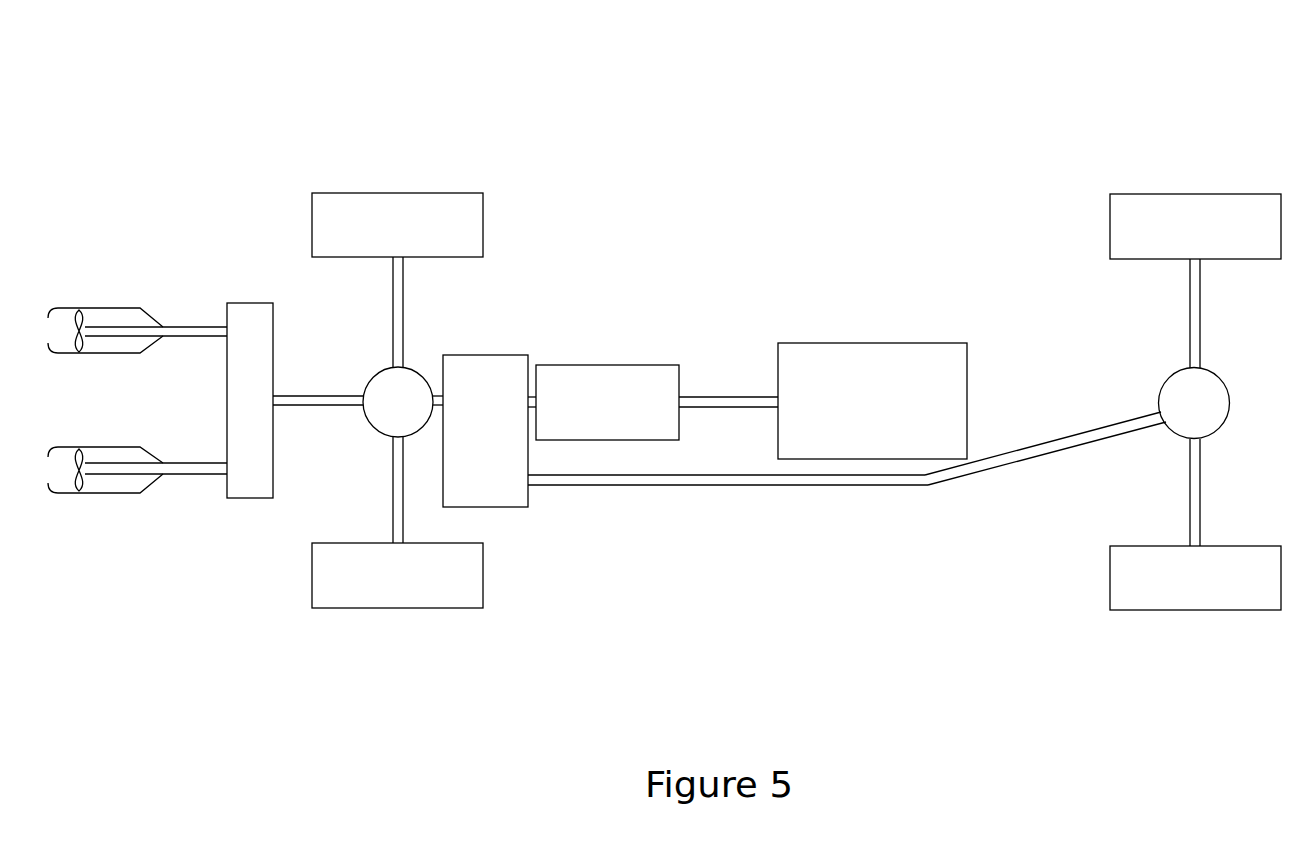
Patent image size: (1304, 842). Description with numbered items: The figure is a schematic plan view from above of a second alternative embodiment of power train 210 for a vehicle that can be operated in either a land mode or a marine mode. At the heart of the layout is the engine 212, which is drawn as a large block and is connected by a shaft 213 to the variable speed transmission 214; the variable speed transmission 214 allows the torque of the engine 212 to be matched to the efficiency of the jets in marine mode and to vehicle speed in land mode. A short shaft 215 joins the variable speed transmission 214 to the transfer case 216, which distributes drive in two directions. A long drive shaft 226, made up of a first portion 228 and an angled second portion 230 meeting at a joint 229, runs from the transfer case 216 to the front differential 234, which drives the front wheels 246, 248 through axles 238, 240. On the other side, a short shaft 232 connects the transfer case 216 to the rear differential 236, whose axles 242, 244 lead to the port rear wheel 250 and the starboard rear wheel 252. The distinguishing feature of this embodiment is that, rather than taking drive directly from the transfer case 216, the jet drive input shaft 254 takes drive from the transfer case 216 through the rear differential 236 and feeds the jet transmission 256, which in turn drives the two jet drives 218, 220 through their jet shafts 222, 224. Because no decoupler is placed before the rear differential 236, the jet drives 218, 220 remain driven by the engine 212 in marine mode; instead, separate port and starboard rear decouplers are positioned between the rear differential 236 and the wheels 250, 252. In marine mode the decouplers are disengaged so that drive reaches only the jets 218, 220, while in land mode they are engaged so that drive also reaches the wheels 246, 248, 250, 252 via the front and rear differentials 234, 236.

The power train 210 is at (707, 138).
The engine 212 is at (863, 417).
The shaft 213 is at (725, 407).
The variable speed transmission 214 is at (612, 416).
The shaft 215 is at (532, 407).
The transfer case 216 is at (495, 432).
The jet drive 218 is at (113, 318).
The jet drive 220 is at (127, 487).
The propeller shaft 222 is at (203, 327).
The propeller shaft 224 is at (202, 465).
The drive shaft 226 is at (872, 487).
The drive shaft first portion 228 is at (743, 480).
The joint 229 is at (928, 486).
The drive shaft second portion 230 is at (1040, 452).
The connecting shaft 232 is at (437, 393).
The front differential 234 is at (1208, 413).
The rear differential 236 is at (413, 410).
The rear axle 238 is at (1194, 330).
The rear axle 240 is at (1195, 502).
The front axle 242 is at (397, 317).
The front axle 244 is at (397, 522).
The front wheel 246 is at (1206, 239).
The front wheel 248 is at (1193, 595).
The port rear wheel 250 is at (395, 235).
The starboard rear wheel 252 is at (410, 590).
The jet drive input shaft 254 is at (318, 398).
The jet transmission 256 is at (265, 400).